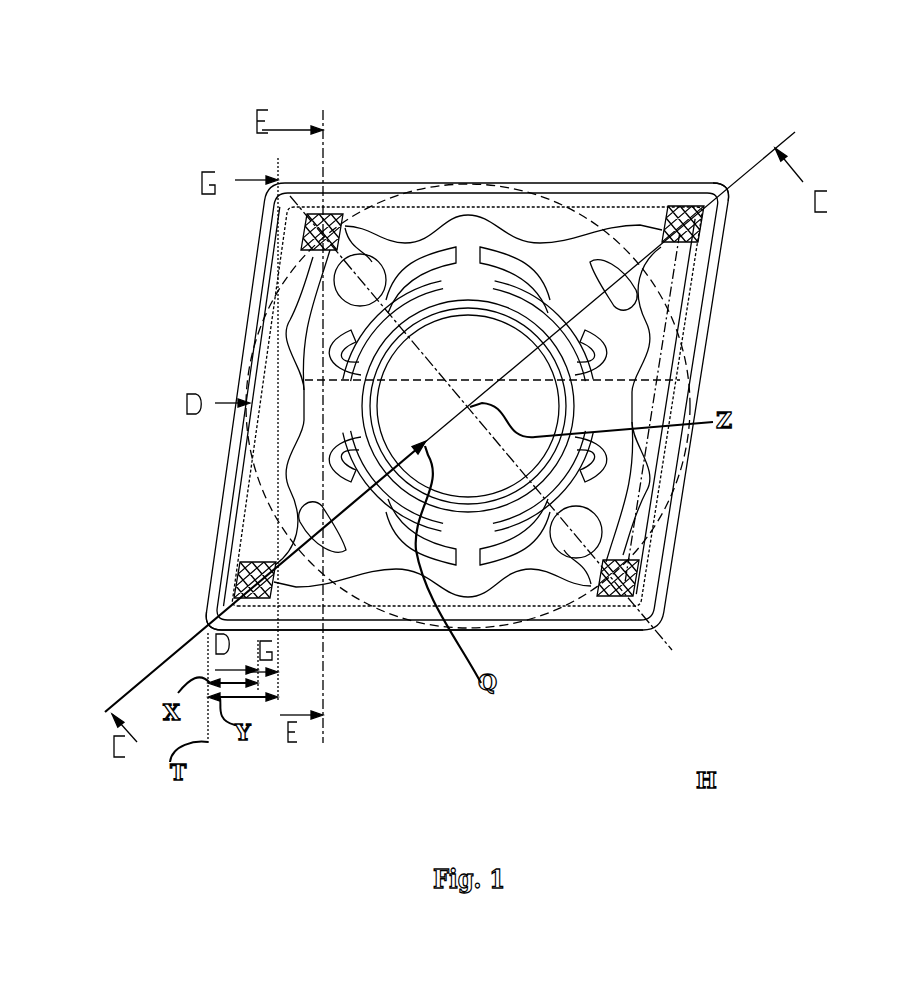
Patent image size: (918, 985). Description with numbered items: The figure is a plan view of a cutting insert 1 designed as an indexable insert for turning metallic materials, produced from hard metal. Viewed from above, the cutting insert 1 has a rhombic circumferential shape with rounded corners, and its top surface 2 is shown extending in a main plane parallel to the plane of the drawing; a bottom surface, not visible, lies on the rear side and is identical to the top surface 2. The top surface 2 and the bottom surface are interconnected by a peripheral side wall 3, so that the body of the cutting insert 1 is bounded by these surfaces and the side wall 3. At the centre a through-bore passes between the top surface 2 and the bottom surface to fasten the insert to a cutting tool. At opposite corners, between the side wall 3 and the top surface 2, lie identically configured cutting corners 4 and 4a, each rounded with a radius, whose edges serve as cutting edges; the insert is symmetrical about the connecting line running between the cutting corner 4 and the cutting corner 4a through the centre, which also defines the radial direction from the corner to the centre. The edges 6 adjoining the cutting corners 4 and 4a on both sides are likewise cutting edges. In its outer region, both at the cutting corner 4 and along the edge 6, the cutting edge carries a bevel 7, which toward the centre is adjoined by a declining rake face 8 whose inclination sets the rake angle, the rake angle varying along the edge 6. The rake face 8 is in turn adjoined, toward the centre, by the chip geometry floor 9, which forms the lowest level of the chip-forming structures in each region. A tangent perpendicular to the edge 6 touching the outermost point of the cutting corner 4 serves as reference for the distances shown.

The cutting insert 1 is at (163, 33).
The top surface 2 is at (660, 332).
The peripheral side wall 3 is at (516, 636).
The cutting corner 4 is at (207, 620).
The cutting corner 4a is at (731, 196).
The edges 6 is at (648, 183).
The bevel 7 is at (228, 545).
The rake face 8 is at (234, 540).
The chip geometry floor 9 is at (297, 598).